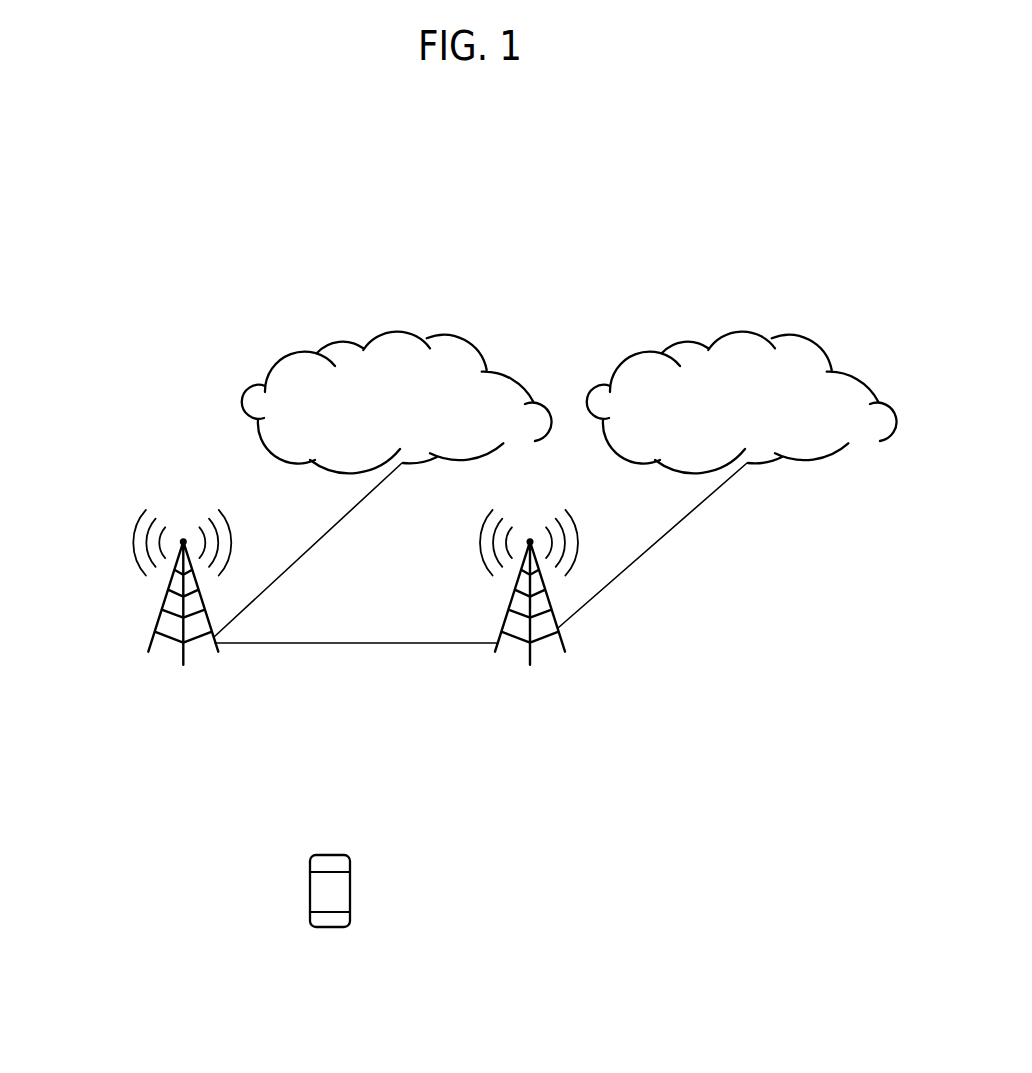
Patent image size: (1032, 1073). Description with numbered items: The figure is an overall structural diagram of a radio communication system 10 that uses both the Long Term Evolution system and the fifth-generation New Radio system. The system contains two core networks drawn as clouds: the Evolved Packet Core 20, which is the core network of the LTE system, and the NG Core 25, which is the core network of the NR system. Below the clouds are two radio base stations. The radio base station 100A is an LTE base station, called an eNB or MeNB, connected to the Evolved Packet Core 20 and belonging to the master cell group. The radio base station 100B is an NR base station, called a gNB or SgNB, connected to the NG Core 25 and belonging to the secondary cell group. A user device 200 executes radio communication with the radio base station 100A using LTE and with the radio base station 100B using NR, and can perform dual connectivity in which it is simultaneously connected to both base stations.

The radio communication system 10 is at (790, 215).
The Evolved Packet Core 20 is at (487, 366).
The NG Core 25 is at (831, 366).
The radio base station 100A is at (155, 627).
The radio base station 100B is at (565, 641).
The user device 200 is at (350, 900).